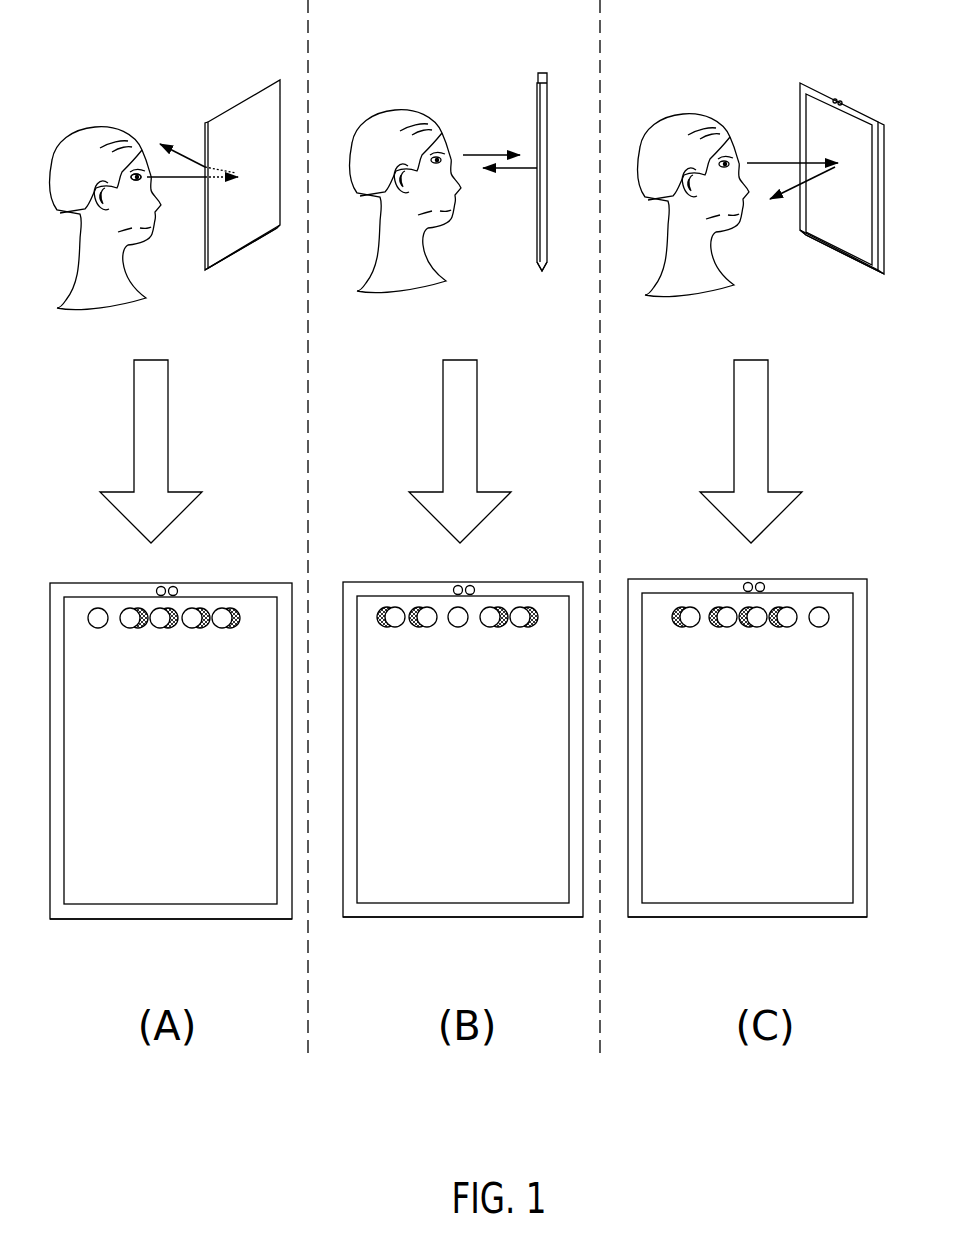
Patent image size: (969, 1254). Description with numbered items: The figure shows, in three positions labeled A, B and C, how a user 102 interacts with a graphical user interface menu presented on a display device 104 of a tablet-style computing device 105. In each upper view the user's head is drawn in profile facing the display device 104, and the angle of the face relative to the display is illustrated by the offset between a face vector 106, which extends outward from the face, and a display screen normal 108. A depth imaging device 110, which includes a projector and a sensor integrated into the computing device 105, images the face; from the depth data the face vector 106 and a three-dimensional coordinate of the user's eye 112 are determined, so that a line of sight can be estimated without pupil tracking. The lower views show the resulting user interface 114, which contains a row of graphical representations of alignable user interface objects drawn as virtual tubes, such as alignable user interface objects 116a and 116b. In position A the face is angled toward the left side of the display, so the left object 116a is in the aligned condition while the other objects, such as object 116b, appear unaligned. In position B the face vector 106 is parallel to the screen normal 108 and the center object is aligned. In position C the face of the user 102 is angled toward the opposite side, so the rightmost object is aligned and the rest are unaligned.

The user 102 is at (86, 303).
The display device 104 is at (262, 90).
The computing device 105 is at (247, 242).
The face vector 106 is at (197, 181).
The display screen normal 108 is at (197, 153).
The depth imaging device 110 is at (845, 101).
The eye 112 is at (144, 188).
The user interface 114 is at (478, 632).
The alignable user interface object 116a is at (101, 633).
The alignable user interface object 116b is at (236, 633).